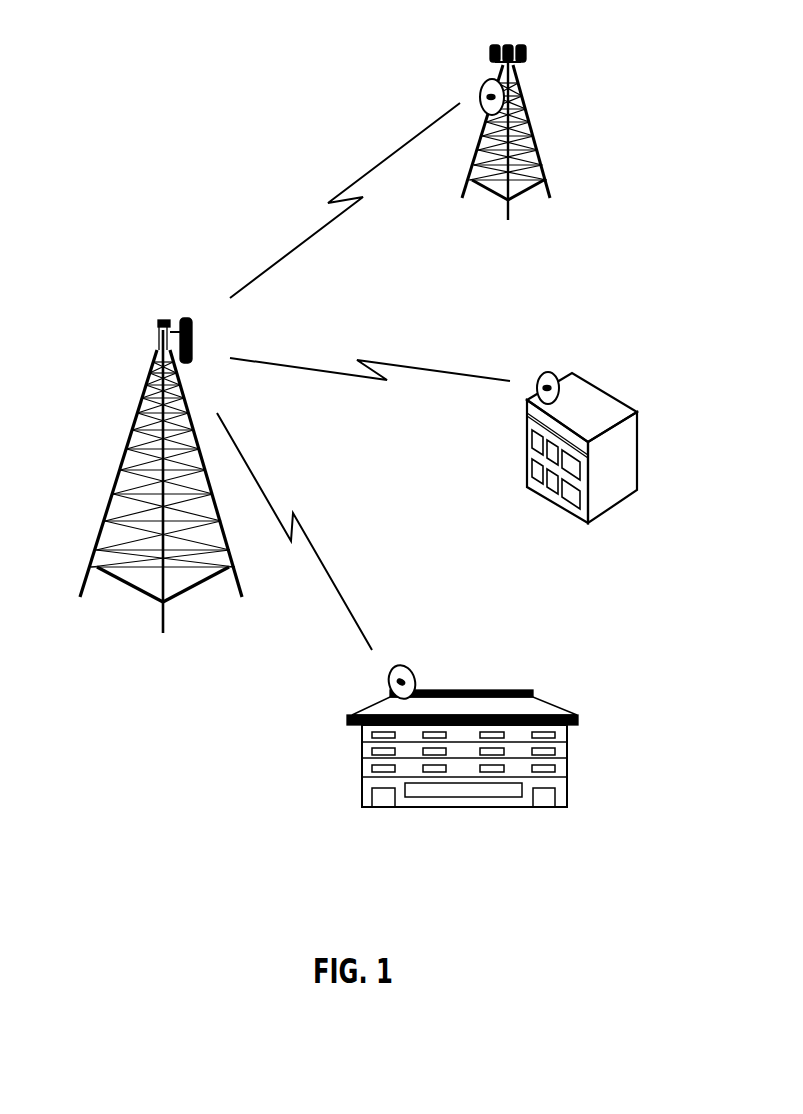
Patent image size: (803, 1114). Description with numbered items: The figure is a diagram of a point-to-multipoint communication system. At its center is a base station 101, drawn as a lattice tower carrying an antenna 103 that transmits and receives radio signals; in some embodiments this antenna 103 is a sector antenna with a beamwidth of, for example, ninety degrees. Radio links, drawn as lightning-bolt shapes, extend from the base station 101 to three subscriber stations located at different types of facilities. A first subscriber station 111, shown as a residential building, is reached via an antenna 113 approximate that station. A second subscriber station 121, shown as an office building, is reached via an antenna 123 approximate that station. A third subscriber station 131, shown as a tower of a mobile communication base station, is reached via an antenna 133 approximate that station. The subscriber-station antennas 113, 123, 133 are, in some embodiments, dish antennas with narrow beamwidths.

The base station 101 is at (110, 538).
The antenna 103 is at (185, 317).
The first subscriber station 111 is at (568, 753).
The antenna 113 is at (415, 675).
The second subscriber station 121 is at (638, 470).
The antenna 123 is at (545, 372).
The third subscriber station 131 is at (537, 160).
The antenna 133 is at (484, 85).